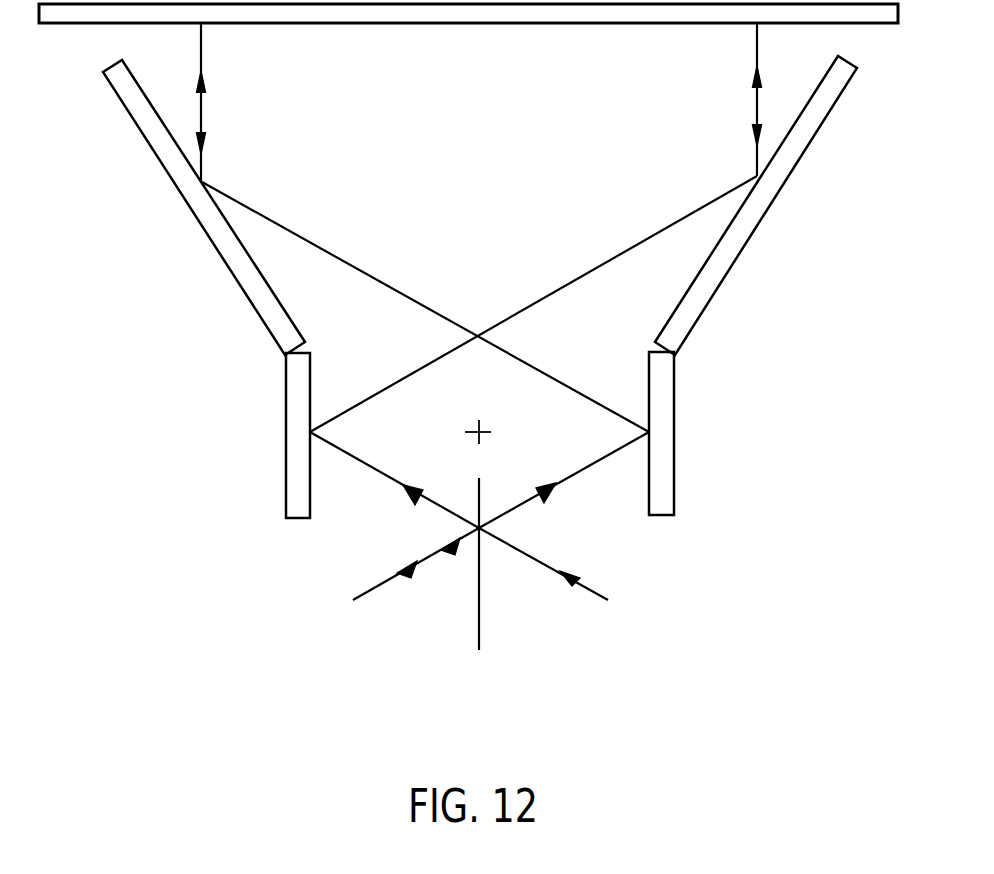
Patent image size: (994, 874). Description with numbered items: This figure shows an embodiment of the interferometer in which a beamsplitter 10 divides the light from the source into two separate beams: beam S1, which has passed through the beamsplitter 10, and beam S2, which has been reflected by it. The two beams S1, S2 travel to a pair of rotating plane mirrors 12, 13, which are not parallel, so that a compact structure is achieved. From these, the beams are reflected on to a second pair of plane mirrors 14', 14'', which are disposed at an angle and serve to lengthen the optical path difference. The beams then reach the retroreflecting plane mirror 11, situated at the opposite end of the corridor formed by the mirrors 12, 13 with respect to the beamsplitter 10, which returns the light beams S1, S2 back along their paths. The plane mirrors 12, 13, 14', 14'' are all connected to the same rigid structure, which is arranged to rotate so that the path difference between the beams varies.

The beamsplitter 10 is at (481, 594).
The plane mirror 11 is at (470, 24).
The plane mirror 12 is at (310, 383).
The plane mirror 13 is at (648, 400).
The plane mirror 14' is at (232, 207).
The plane mirror 14'' is at (733, 205).
The beam S1 is at (347, 452).
The beam S2 is at (528, 502).